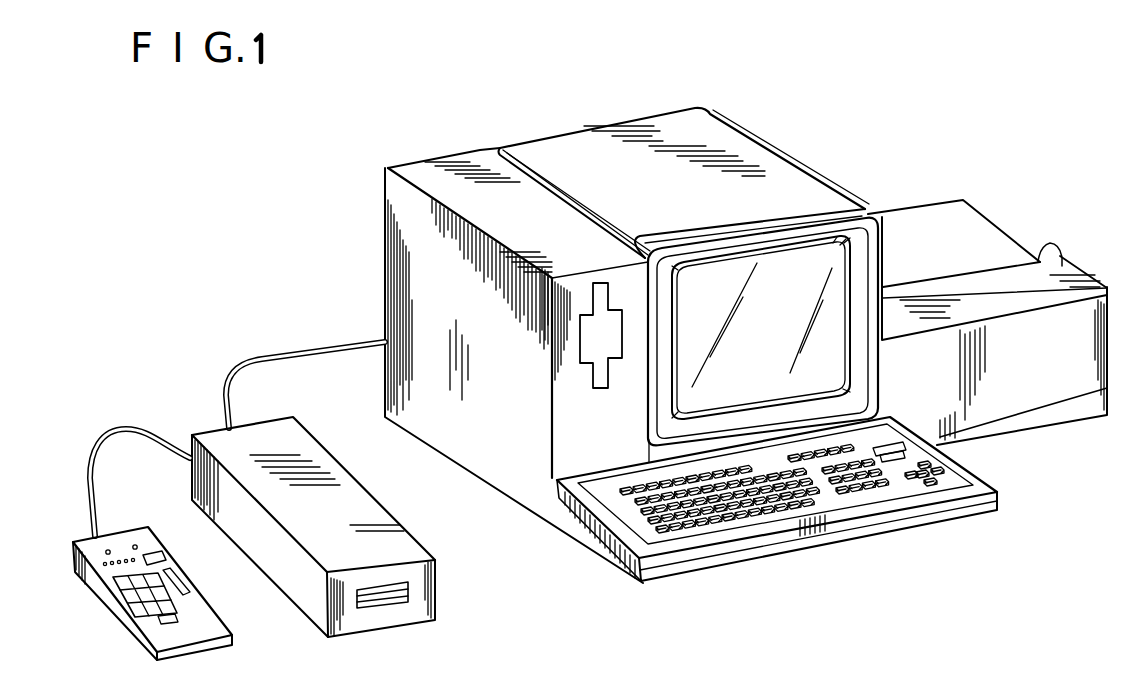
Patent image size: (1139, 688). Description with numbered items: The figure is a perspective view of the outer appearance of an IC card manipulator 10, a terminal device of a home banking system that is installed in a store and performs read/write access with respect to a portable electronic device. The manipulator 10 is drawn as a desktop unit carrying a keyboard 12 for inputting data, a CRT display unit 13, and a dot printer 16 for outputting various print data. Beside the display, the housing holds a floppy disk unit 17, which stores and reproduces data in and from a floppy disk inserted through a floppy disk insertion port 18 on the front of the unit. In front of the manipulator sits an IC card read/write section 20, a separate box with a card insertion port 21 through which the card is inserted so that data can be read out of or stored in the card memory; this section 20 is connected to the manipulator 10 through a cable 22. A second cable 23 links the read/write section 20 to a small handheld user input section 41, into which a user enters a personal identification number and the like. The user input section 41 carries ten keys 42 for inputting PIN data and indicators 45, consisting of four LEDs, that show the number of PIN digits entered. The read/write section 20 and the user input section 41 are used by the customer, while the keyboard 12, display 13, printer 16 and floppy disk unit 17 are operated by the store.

The IC card manipulator 10 is at (691, 322).
The keyboard 12 is at (757, 513).
The CRT display unit 13 is at (822, 262).
The dot printer 16 is at (920, 212).
The floppy disk unit 17 is at (436, 163).
The floppy disk insertion port 18 is at (600, 382).
The IC card read/write section 20 is at (334, 527).
The card insertion port 21 is at (410, 587).
The cable 22 is at (313, 348).
The cable 23 is at (125, 430).
The user input section 41 is at (161, 604).
The ten keys 42 is at (125, 598).
The indicators 45 is at (155, 545).